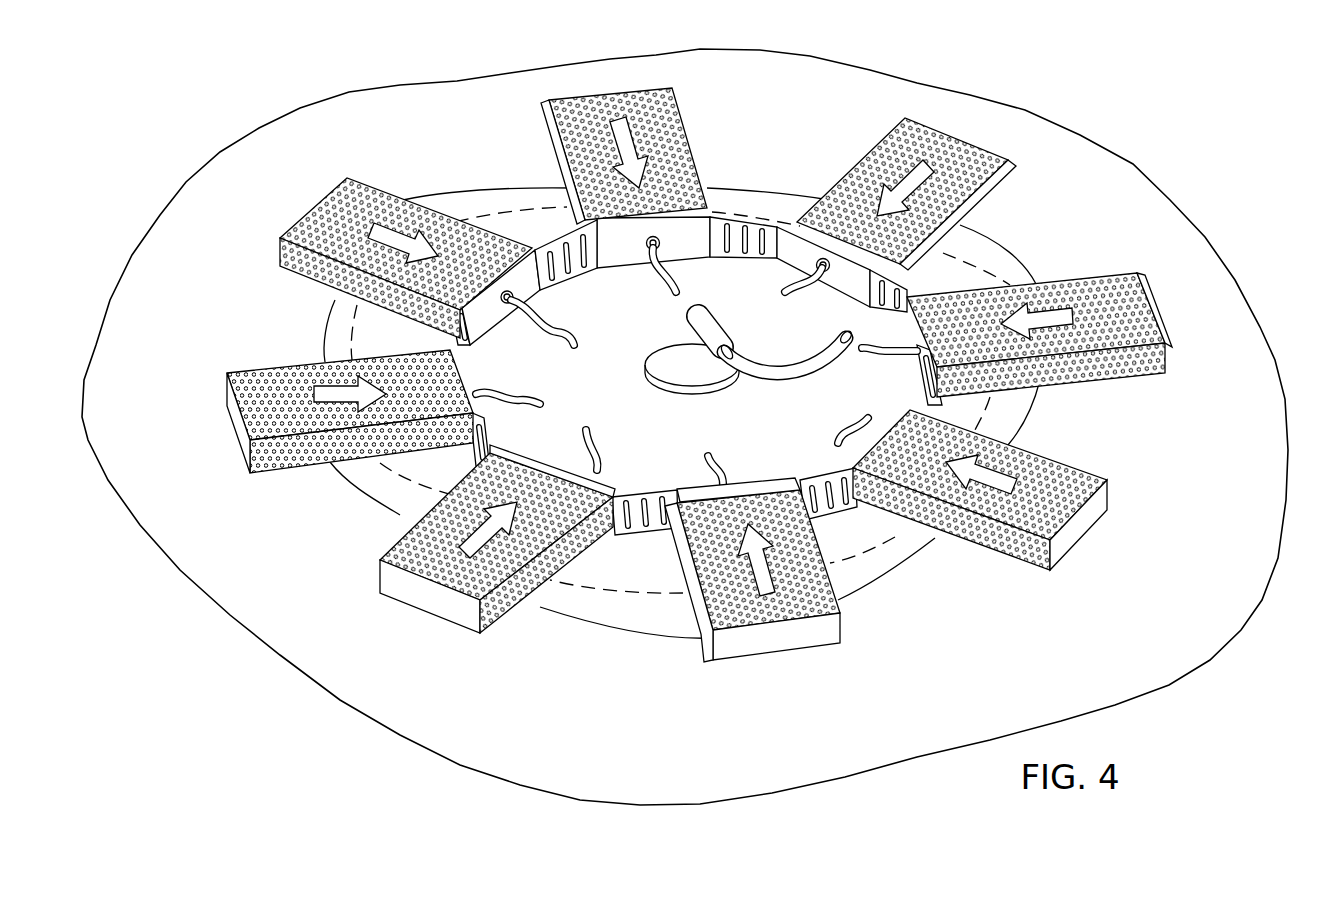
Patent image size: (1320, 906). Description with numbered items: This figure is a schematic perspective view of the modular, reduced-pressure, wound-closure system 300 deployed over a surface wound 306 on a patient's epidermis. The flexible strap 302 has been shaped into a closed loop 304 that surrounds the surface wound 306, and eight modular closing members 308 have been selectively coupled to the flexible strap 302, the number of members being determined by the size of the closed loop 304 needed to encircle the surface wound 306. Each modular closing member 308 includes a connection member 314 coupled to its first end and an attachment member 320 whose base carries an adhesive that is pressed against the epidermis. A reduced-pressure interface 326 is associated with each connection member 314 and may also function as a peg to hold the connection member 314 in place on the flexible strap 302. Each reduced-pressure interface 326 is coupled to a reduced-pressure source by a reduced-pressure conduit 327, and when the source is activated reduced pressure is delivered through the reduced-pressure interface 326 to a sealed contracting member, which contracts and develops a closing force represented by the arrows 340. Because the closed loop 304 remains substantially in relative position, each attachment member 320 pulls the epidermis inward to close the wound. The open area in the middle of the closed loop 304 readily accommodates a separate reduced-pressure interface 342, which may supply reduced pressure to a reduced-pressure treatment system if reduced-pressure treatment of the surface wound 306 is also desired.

The modular, reduced-pressure, wound-closure system 300 is at (1128, 80).
The flexible strap 302 is at (761, 208).
The closed loop 304 is at (573, 272).
The surface wound 306 is at (623, 603).
The modular closing member 308 is at (369, 178).
The connection member 314 is at (840, 277).
The attachment member 320 is at (1087, 527).
The reduced-pressure interface 326 is at (665, 283).
The reduced-pressure conduit 327 is at (500, 390).
The arrows representing closing force 340 is at (407, 218).
The reduced-pressure interface 342 is at (730, 327).